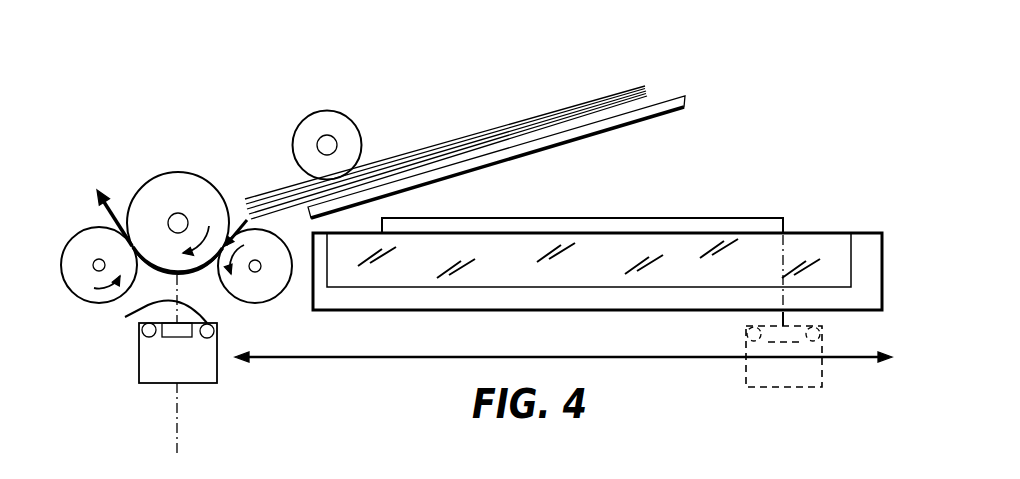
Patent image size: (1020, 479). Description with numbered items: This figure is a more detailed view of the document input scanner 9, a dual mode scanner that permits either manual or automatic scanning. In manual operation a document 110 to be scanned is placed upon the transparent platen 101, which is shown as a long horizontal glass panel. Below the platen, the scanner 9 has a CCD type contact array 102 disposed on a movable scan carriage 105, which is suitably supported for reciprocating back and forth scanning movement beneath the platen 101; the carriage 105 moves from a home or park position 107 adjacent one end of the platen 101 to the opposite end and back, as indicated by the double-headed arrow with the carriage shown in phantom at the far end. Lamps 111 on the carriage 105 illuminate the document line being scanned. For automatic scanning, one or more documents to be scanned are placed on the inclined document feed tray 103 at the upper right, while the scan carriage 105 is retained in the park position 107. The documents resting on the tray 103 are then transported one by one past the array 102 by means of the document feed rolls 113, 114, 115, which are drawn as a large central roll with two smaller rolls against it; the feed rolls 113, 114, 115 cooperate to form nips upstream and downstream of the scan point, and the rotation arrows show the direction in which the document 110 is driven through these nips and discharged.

The document scanner 9 is at (212, 162).
The transparent platen 101 is at (802, 233).
The CCD type contact array 102 is at (177, 338).
The inclined document feed tray 103 is at (618, 125).
The movable scan carriage 105 is at (195, 384).
The home or park position 107 is at (177, 425).
The document 110 is at (648, 97).
The lamps 111 is at (125, 317).
The document feed roll 113 is at (272, 288).
The document feed roll 114 is at (137, 197).
The document feed roll 115 is at (65, 247).